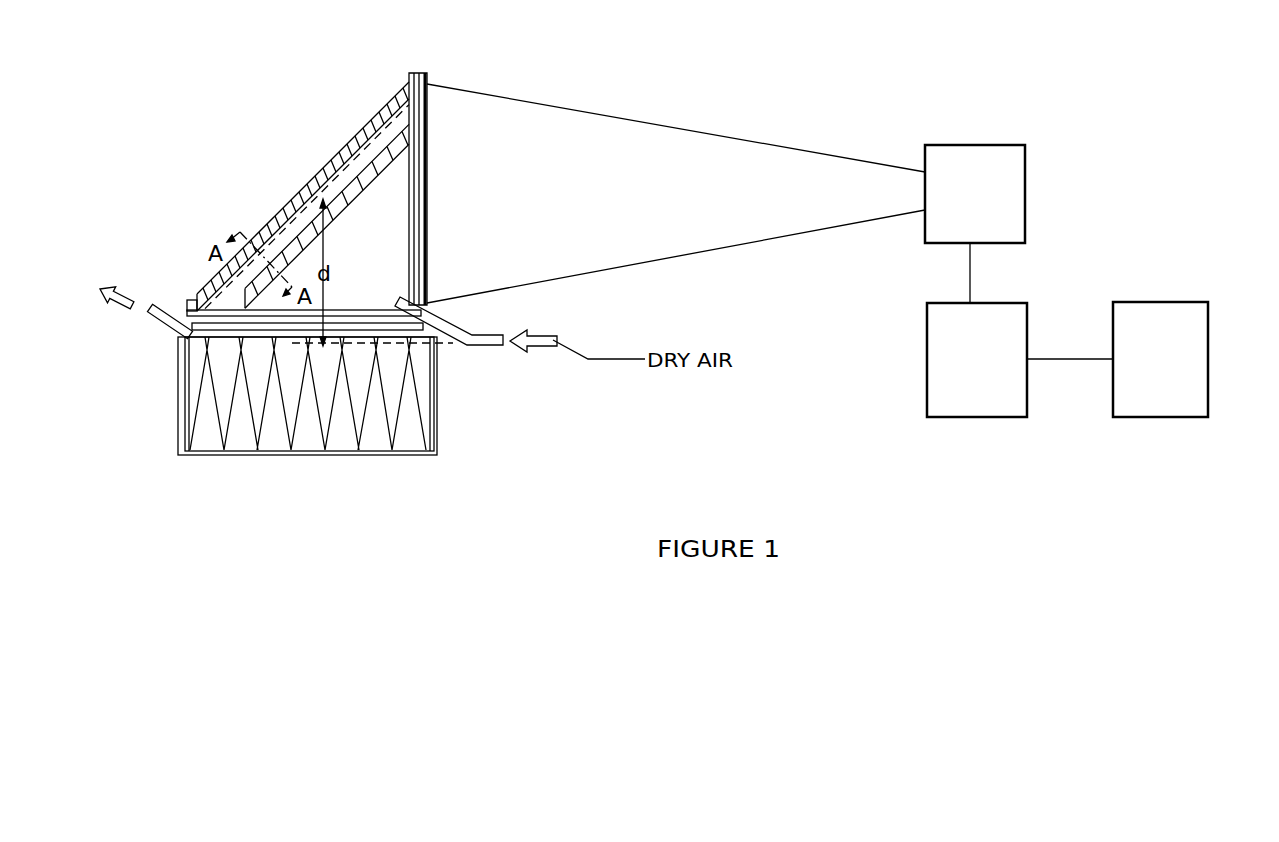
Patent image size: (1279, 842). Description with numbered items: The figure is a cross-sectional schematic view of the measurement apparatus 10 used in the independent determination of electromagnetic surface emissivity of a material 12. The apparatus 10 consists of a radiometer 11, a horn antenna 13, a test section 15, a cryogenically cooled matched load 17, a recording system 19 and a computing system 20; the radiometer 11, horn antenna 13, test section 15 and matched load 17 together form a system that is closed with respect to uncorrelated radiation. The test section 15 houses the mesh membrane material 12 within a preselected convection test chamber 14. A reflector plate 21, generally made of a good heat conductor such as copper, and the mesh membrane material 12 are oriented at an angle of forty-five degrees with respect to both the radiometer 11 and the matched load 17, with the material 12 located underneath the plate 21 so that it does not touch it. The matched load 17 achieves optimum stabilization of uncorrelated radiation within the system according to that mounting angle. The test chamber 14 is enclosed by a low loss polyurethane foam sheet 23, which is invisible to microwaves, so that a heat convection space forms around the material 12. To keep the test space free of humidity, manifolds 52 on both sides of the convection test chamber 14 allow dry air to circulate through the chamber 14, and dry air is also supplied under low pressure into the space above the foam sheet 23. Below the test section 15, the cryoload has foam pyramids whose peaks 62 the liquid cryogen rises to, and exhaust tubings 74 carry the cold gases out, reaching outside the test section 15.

The measurement apparatus 10 is at (608, 64).
The radiometer 11 is at (1012, 185).
The mesh membrane material 12 is at (357, 157).
The horn antenna 13 is at (702, 133).
The convection test chamber 14 is at (307, 232).
The test section 15 is at (371, 219).
The cryogenically cooled matched load 17 is at (178, 387).
The recording system 19 is at (995, 315).
The computing system 20 is at (1172, 313).
The reflector plate 21 is at (397, 102).
The low loss polyurethane foam sheet 23 is at (393, 147).
The manifolds 52 is at (490, 332).
The peaks 62 is at (442, 345).
The exhaust tubings 74 is at (163, 320).